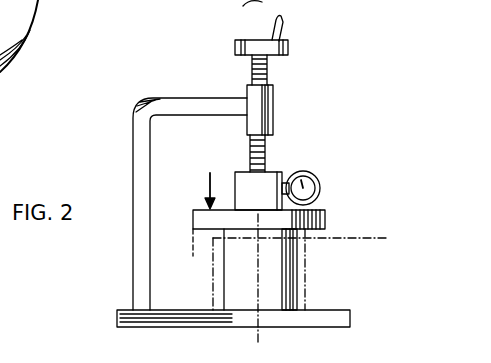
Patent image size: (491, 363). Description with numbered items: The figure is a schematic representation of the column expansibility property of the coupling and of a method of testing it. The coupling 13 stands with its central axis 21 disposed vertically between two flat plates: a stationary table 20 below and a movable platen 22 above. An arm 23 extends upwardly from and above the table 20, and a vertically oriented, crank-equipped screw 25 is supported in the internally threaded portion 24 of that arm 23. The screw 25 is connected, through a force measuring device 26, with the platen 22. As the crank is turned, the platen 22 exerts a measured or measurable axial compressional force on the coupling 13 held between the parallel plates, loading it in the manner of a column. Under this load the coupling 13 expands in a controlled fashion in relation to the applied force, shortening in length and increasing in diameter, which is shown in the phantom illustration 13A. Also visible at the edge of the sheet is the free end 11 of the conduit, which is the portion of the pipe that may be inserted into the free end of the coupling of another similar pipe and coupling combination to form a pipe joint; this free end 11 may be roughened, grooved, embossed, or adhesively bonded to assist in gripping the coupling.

The free end 11 is at (32, 14).
The coupling 13 is at (298, 271).
The phantom illustration 13A is at (316, 245).
The stationary table 20 is at (336, 302).
The central axis 21 is at (258, 272).
The movable platen 22 is at (326, 218).
The arm 23 is at (141, 172).
The internally threaded portion 24 is at (274, 103).
The crank-equipped screw 25 is at (268, 148).
The force measuring device 26 is at (318, 178).